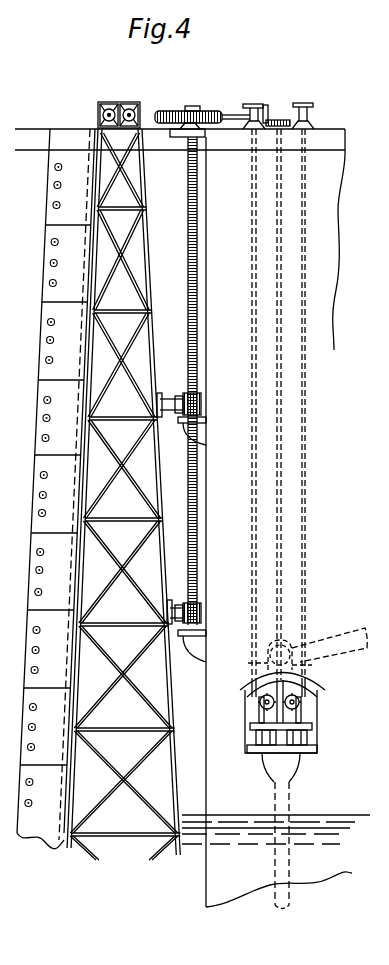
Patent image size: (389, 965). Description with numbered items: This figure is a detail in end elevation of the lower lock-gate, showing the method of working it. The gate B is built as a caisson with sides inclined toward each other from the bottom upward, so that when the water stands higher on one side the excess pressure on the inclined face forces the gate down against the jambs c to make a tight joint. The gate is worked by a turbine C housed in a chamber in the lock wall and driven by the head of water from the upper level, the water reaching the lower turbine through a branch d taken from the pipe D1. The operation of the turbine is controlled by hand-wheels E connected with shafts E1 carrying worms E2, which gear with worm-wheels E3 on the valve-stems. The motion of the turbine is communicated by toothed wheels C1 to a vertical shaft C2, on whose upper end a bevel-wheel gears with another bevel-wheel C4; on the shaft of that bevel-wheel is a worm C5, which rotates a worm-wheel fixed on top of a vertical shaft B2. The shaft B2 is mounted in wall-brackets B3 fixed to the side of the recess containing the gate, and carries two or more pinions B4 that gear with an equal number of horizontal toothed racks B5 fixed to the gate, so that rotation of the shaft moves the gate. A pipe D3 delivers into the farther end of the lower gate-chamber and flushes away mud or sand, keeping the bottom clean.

The gate B is at (123, 481).
The vertical shaft B2 is at (190, 292).
The wall-brackets B3 is at (206, 431).
The pinions B4 is at (208, 397).
The horizontal toothed racks B5 is at (172, 399).
The turbine C is at (309, 741).
The toothed wheels C1 is at (255, 727).
The vertical shaft C2 is at (279, 453).
The bevel-wheel C4 is at (176, 112).
The worm C5 is at (225, 108).
The pipe D1 is at (326, 640).
The pipe D3 is at (276, 868).
The hand-wheels E is at (277, 110).
The shafts E1 is at (254, 312).
The worms E2 is at (259, 703).
The worm-wheels E3 is at (260, 710).
The jambs c is at (56, 489).
The branch d is at (279, 658).